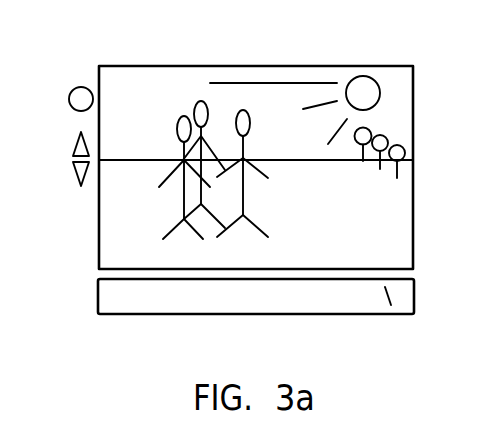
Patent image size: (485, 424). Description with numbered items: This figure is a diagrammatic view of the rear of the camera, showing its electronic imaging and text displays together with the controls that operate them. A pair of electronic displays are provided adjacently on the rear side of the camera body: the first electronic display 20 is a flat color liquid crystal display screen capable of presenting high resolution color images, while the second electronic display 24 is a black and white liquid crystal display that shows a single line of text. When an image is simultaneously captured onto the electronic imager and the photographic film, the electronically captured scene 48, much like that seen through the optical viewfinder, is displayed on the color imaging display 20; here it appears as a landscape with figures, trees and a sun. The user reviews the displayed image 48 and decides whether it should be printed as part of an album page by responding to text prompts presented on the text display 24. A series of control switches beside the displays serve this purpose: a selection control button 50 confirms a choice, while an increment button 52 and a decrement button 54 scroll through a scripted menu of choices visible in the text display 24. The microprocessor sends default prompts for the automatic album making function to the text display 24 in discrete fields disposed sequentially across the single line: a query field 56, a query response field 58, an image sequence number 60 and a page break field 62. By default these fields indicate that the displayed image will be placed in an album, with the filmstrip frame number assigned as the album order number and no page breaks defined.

The first electronic display 20 is at (274, 66).
The second electronic display 24 is at (98, 297).
The electronically captured scene 48 is at (368, 218).
The selection control button 50 is at (69, 99).
The increment button 52 is at (72, 149).
The decrement button 54 is at (72, 177).
The query field 56 is at (147, 314).
The query response field 58 is at (247, 315).
The image sequence number 60 is at (333, 316).
The page break field 62 is at (397, 316).